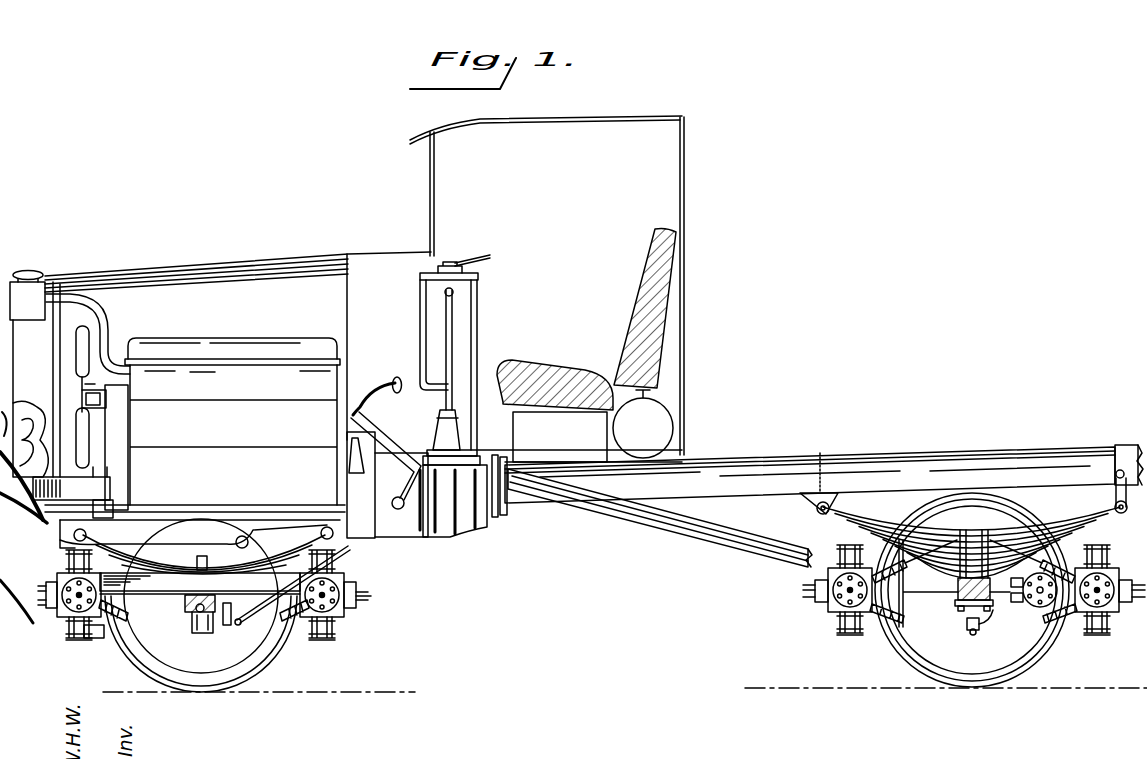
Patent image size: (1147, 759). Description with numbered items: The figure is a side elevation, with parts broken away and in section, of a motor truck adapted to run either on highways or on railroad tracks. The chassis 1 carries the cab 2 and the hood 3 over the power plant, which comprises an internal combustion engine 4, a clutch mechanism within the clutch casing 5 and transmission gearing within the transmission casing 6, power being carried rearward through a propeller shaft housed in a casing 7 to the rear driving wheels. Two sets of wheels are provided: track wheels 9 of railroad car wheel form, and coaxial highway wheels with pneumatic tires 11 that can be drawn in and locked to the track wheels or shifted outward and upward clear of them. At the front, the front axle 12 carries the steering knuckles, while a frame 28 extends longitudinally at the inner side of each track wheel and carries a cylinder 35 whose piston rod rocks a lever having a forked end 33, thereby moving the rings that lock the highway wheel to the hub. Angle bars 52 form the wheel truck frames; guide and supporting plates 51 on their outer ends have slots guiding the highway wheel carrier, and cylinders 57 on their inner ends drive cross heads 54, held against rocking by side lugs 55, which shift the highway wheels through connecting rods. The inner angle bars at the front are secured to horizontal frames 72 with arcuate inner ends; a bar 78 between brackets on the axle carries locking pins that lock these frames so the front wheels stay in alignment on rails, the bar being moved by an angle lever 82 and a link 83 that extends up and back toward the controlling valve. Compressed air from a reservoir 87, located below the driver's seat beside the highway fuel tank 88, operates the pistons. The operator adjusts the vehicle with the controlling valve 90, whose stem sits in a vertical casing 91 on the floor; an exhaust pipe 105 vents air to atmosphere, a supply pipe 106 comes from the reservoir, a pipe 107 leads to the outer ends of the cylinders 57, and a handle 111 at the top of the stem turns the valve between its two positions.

The chassis 1 is at (767, 478).
The cab 2 is at (686, 173).
The hood 3 is at (220, 264).
The internal combustion engine 4 is at (232, 421).
The clutch casing 5 is at (396, 527).
The transmission casing 6 is at (472, 518).
The propeller shaft casing 7 is at (681, 527).
The track wheels 9 is at (181, 660).
The pneumatic tires 11 is at (223, 673).
The front axle 12 is at (203, 633).
The frame 28 is at (293, 632).
The forked end of lever 33 is at (983, 626).
The cylinder 35 is at (275, 647).
The guide and supporting plates 51 is at (350, 638).
The angle bars 52 is at (57, 585).
The cross heads 54 is at (111, 640).
The side ribs or lugs 55 is at (362, 599).
The cylinders 57 is at (72, 618).
The frames 72 is at (200, 582).
The bar 78 is at (188, 606).
The angle lever 82 is at (238, 625).
The link 83 is at (350, 548).
The reservoir or tank 87 is at (651, 412).
The fuel tank 88 is at (560, 437).
The controlling valve 90 is at (441, 266).
The vertical casing 91 is at (456, 352).
The exhaust pipe 105 is at (479, 323).
The supply pipe 106 is at (421, 338).
The pipe 107 is at (479, 285).
The handle 111 is at (480, 259).